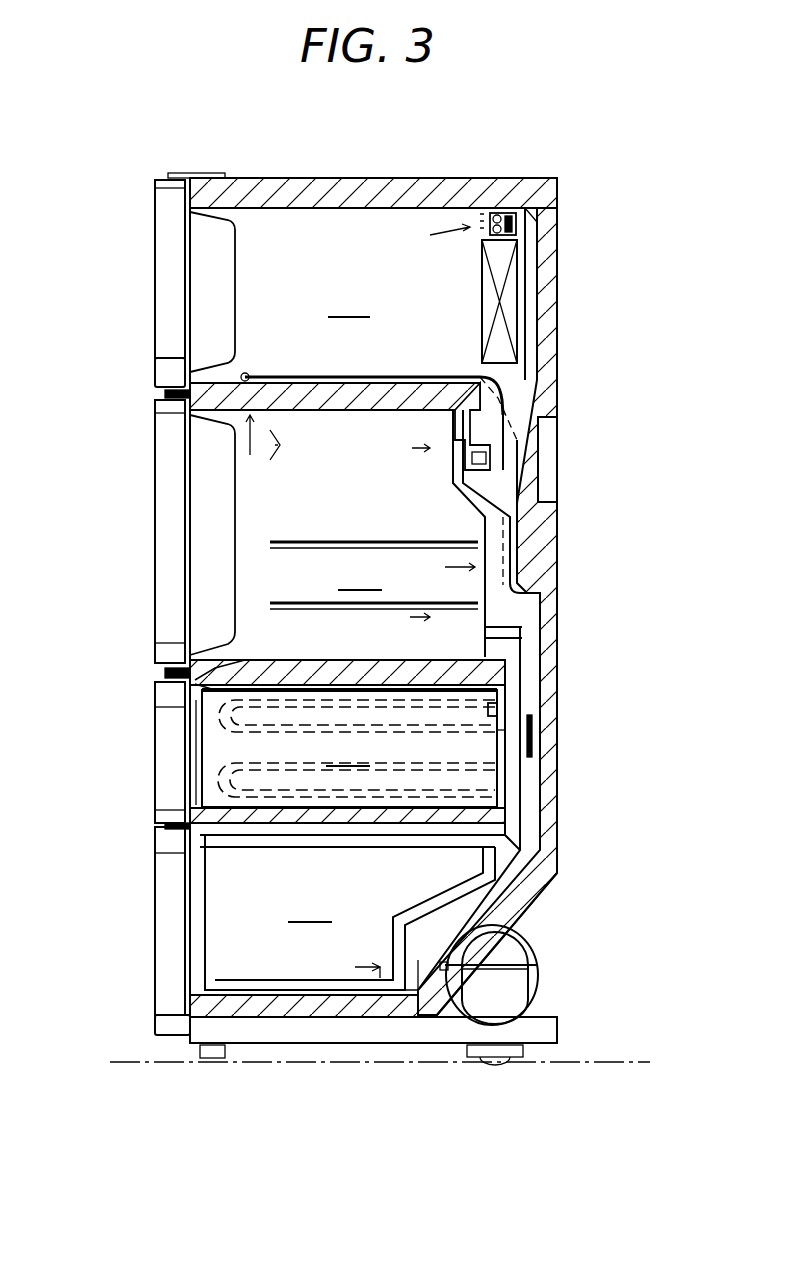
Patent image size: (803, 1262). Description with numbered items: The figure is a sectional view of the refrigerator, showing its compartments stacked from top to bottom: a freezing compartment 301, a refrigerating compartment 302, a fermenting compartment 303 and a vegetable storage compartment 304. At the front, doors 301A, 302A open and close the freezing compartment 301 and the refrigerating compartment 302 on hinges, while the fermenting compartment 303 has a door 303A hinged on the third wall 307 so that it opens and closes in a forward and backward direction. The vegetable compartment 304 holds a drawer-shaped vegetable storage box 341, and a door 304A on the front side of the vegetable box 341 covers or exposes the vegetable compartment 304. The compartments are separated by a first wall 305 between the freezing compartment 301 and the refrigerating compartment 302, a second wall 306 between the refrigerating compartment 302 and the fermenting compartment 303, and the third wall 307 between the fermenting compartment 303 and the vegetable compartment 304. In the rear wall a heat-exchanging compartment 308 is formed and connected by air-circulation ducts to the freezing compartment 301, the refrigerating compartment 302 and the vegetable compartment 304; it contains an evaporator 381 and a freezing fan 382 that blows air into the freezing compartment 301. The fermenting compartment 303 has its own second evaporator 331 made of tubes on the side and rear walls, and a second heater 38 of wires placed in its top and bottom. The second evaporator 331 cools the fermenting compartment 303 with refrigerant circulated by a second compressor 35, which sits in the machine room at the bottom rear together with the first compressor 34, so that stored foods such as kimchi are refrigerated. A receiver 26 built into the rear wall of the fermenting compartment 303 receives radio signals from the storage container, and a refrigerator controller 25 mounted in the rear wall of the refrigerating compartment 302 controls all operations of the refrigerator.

The refrigerator controller 25 is at (555, 466).
The receiver 26 is at (497, 710).
The first compressor 34 is at (453, 990).
The second compressor 35 is at (525, 1000).
The second heater 38 is at (245, 676).
The freezing compartment 301 is at (357, 311).
The door 301A is at (165, 264).
The refrigerating compartment 302 is at (393, 630).
The door 302A is at (168, 516).
The fermenting compartment 303 is at (353, 746).
The door 303A is at (167, 750).
The vegetable storage compartment 304 is at (355, 912).
The door 304A is at (172, 916).
The first wall 305 is at (200, 414).
The second wall 306 is at (195, 681).
The third wall 307 is at (205, 829).
The heat-exchanging compartment 308 is at (525, 272).
The second evaporator 331 is at (495, 769).
The vegetable storage box 341 is at (365, 965).
The evaporator 381 is at (510, 316).
The freezing fan 382 is at (508, 208).